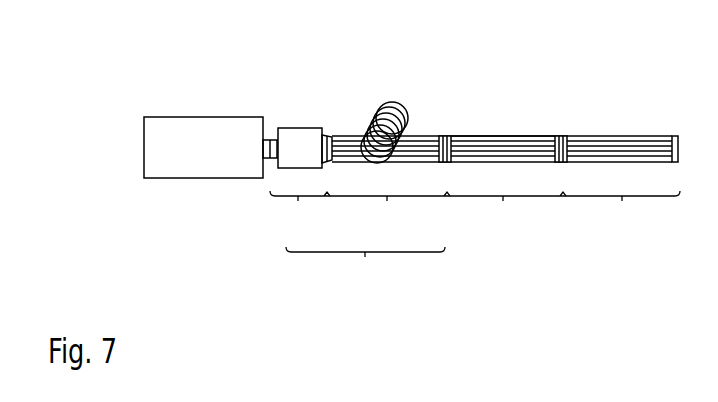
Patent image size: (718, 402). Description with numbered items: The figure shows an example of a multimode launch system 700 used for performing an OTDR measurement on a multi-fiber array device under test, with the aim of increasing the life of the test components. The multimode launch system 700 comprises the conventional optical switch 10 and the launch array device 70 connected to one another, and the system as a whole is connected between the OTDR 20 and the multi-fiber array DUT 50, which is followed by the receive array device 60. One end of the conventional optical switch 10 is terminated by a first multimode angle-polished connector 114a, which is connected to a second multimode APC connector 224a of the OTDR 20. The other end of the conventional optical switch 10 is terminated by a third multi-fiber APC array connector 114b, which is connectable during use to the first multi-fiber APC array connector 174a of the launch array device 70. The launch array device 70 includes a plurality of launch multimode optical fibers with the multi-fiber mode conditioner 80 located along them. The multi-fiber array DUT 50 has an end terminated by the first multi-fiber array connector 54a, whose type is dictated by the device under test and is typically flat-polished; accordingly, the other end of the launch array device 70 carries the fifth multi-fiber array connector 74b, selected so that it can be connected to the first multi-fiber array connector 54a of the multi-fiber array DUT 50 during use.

The OTDR 20 is at (202, 116).
The first multimode angle-polished connector 114a is at (270, 150).
The second multimode APC connector 224a is at (270, 150).
The third multi-fiber APC array connector 114b is at (323, 133).
The first multi-fiber APC array connector 174a is at (332, 133).
The multi-fiber mode conditioner 80 is at (388, 100).
The fifth multi-fiber array connector 74b is at (440, 133).
The first multi-fiber array connector 54a is at (450, 133).
The conventional optical switch 10 is at (300, 216).
The launch array device 70 is at (388, 216).
The multi-fiber array DUT 50 is at (506, 216).
The receive array device 60 is at (621, 216).
The multimode launch system 700 is at (365, 270).